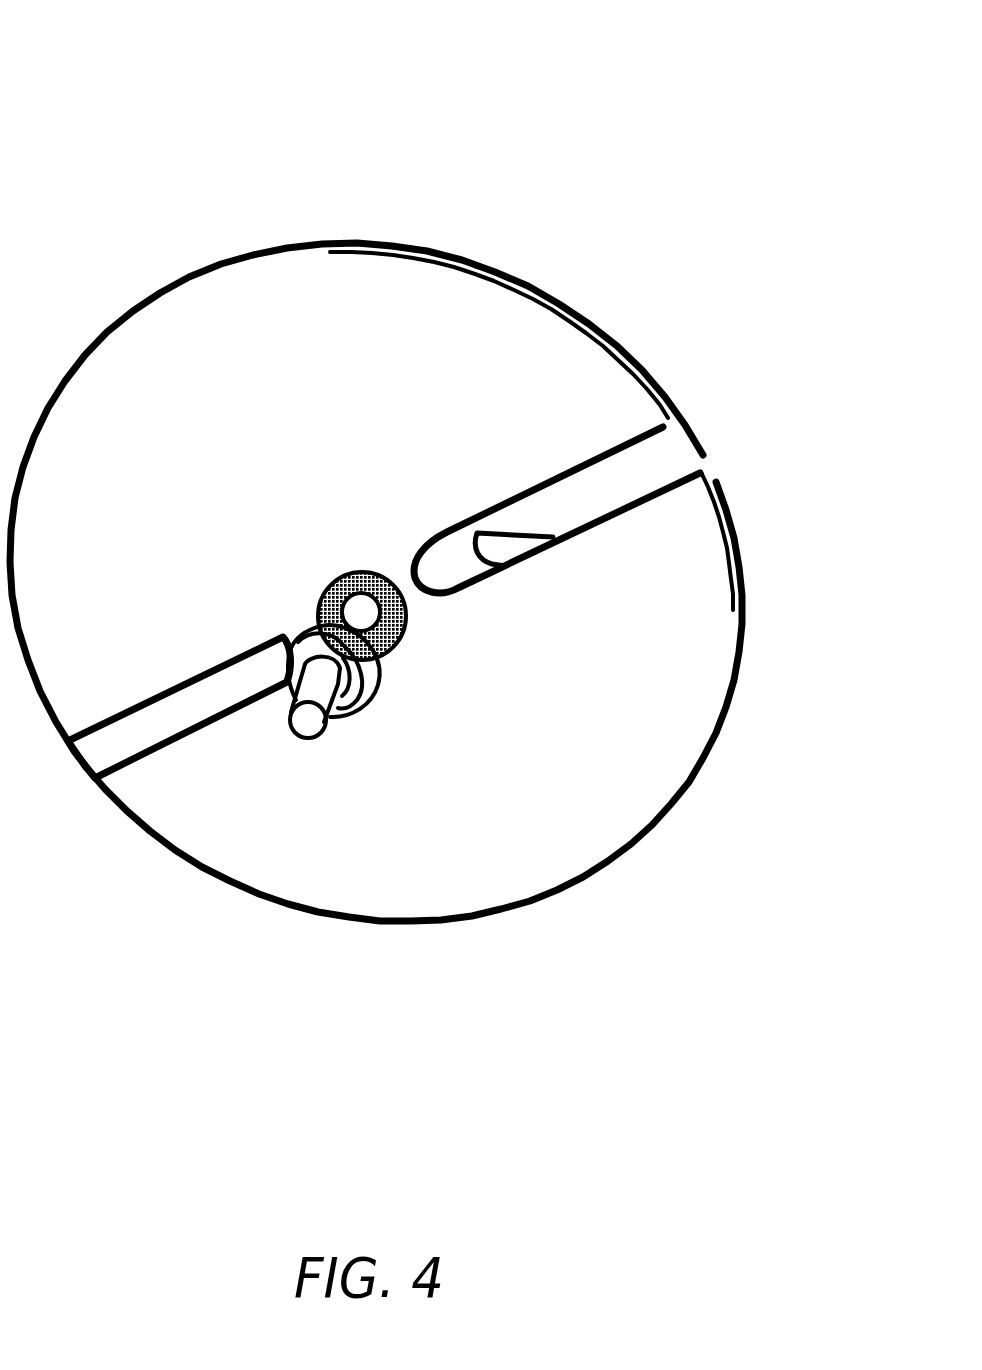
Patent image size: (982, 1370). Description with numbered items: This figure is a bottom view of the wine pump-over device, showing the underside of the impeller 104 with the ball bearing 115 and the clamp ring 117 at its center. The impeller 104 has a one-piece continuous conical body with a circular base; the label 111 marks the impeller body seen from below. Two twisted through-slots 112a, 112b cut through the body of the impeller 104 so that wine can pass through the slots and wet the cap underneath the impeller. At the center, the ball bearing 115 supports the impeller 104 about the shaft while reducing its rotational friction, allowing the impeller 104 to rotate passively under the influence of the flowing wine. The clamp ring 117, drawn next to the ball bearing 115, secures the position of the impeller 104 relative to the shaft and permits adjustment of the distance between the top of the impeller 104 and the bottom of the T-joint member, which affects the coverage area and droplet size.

The impeller 104 is at (123, 62).
The disc 111 is at (121, 496).
The twisted through-slot 112a is at (663, 472).
The twisted through-slot 112b is at (88, 742).
The ball bearing 115 is at (390, 618).
The clamp ring 117 is at (367, 677).